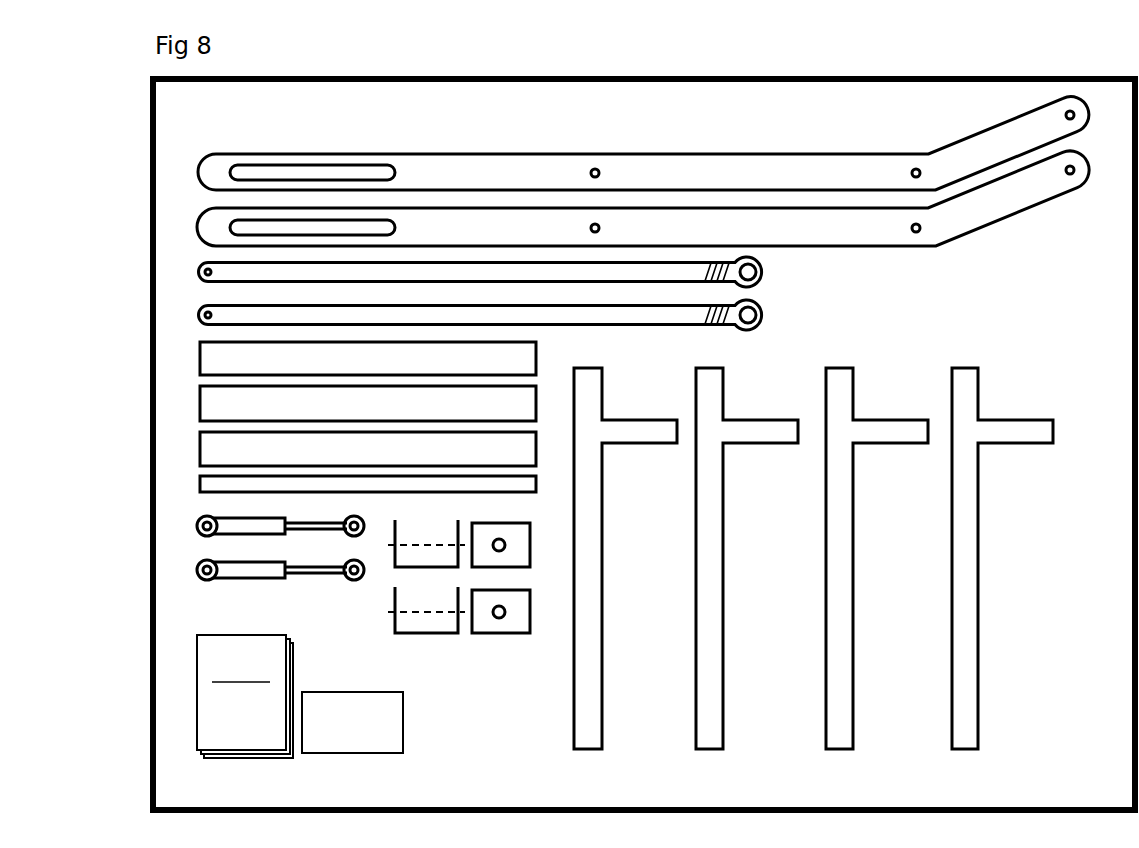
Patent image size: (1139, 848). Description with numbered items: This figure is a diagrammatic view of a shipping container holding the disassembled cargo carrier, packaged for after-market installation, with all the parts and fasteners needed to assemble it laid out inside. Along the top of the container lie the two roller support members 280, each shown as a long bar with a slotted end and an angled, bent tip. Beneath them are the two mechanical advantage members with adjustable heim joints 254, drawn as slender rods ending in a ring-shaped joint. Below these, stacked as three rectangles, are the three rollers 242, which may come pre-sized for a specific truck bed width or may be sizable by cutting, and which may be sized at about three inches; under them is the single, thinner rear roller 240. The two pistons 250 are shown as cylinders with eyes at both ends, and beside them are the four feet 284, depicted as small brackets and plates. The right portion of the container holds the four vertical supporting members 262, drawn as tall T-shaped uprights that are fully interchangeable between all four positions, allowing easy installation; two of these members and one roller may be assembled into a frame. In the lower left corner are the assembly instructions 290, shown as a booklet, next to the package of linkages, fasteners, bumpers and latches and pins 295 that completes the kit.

The roller support member 280 is at (199, 161).
The mechanical advantage member with adjustable heim joint 254 is at (200, 272).
The roller 242 is at (198, 350).
The rear roller 240 is at (200, 478).
The piston 250 is at (200, 570).
The foot 284 is at (493, 628).
The vertical supporting member 262 is at (975, 364).
The assembly instructions 290 is at (197, 682).
The linkages, fasteners, bumpers and latches and pins 295 is at (357, 750).